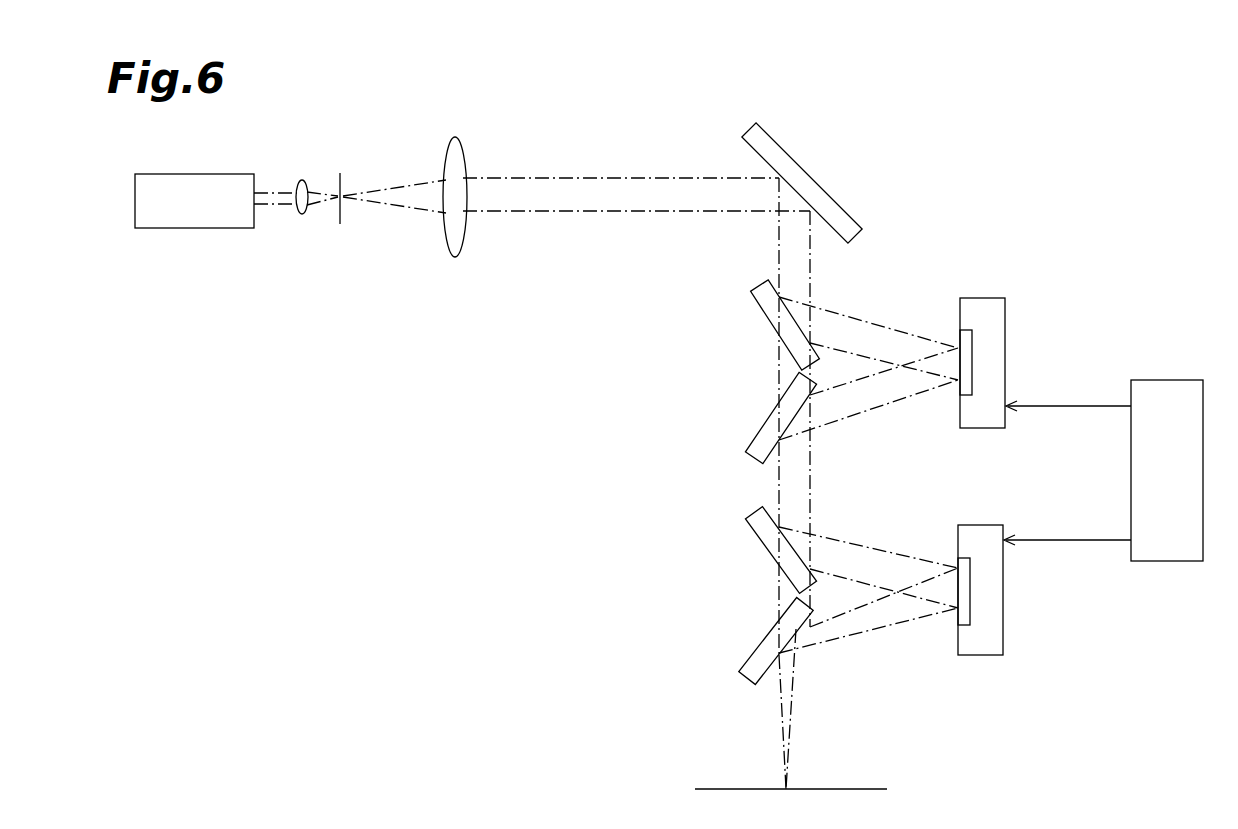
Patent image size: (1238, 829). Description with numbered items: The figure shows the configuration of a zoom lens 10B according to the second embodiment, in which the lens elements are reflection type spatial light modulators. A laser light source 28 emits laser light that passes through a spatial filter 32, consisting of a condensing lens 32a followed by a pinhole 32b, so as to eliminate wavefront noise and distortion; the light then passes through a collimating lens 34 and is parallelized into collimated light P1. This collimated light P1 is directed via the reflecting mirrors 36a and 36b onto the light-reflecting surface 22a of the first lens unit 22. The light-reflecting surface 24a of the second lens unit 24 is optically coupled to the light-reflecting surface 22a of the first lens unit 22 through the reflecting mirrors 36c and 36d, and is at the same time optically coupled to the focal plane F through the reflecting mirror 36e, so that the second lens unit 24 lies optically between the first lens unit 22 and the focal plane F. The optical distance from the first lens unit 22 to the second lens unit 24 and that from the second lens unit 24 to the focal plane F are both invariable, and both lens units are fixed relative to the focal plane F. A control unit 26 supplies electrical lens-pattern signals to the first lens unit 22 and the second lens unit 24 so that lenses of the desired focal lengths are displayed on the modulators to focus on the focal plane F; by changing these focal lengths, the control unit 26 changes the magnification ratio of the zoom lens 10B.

The zoom lens 10B is at (1084, 135).
The laser light source 28 is at (194, 228).
The spatial filter 32 is at (336, 237).
The condensing lens 32a is at (302, 214).
The pinhole 32b is at (366, 221).
The collimating lens 34 is at (459, 246).
The collimated light P1 is at (652, 177).
The reflecting mirror 36a is at (768, 132).
The reflecting mirror 36b is at (762, 317).
The reflecting mirror 36c is at (763, 420).
The reflecting mirror 36d is at (765, 547).
The reflecting mirror 36e is at (757, 648).
The first lens unit 22 is at (976, 363).
The light-reflecting surface 22a is at (957, 357).
The second lens unit 24 is at (973, 598).
The light-reflecting surface 24a is at (957, 584).
The control unit 26 is at (1177, 561).
The focal plane F is at (865, 789).